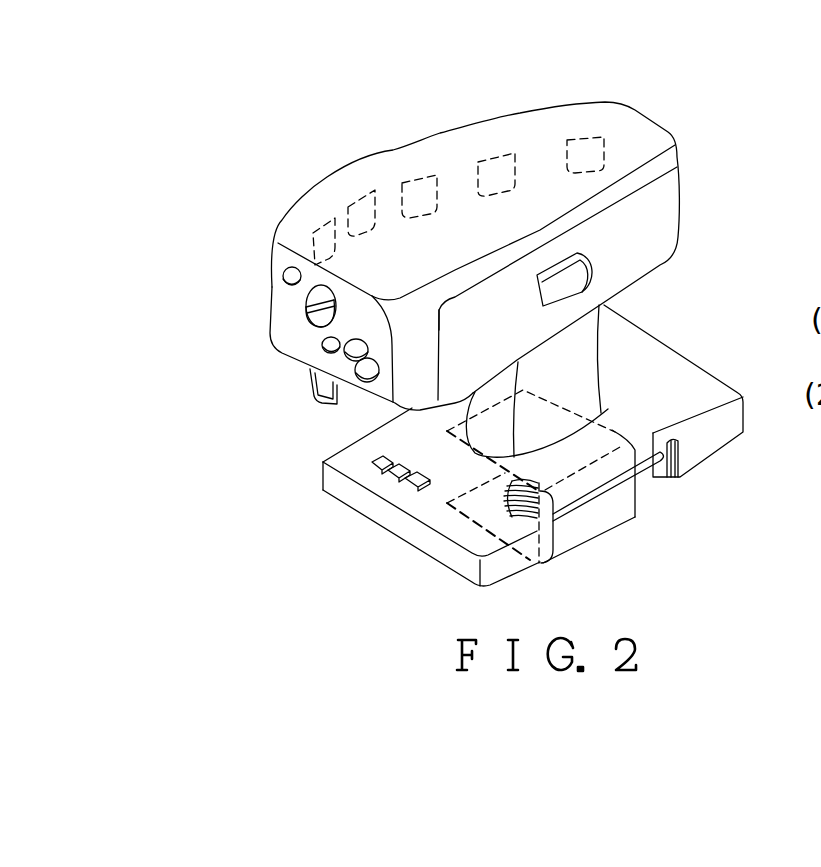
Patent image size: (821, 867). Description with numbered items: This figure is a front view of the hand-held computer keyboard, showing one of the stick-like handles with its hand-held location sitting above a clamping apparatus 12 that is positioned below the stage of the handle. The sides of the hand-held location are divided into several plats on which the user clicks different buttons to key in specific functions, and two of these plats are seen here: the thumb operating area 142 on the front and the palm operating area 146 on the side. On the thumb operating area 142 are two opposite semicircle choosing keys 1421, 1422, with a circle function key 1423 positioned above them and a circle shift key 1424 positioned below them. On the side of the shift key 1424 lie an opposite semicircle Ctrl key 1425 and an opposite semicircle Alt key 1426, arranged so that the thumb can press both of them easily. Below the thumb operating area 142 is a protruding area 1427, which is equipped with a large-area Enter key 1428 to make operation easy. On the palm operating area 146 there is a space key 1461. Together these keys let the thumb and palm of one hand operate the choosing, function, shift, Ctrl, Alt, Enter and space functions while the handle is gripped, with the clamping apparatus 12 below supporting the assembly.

The clamping apparatus 12 is at (597, 522).
The thumb operating area 142 is at (287, 315).
The choosing key 1421 is at (321, 290).
The choosing key 1422 is at (333, 317).
The function key 1423 is at (283, 270).
The shift key 1424 is at (310, 367).
The Ctrl key 1425 is at (357, 380).
The Alt key 1426 is at (375, 380).
The protruding area 1427 is at (311, 393).
The Enter key 1428 is at (324, 385).
The palm operating area 146 is at (668, 215).
The space key 1461 is at (577, 273).